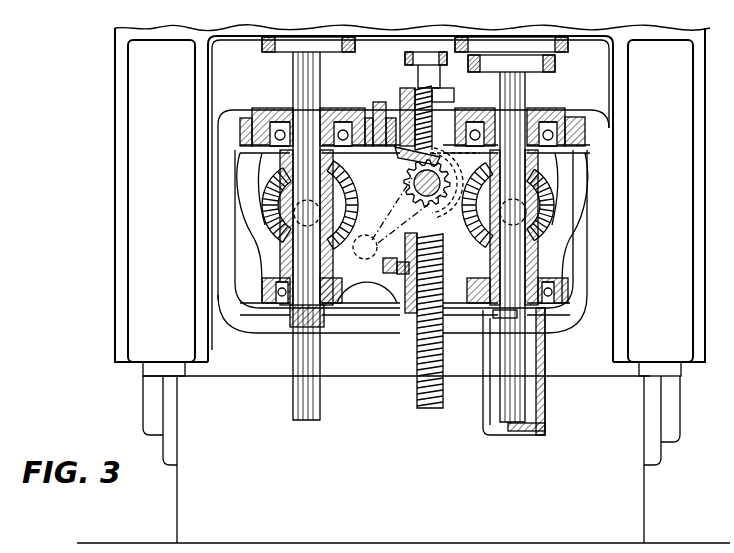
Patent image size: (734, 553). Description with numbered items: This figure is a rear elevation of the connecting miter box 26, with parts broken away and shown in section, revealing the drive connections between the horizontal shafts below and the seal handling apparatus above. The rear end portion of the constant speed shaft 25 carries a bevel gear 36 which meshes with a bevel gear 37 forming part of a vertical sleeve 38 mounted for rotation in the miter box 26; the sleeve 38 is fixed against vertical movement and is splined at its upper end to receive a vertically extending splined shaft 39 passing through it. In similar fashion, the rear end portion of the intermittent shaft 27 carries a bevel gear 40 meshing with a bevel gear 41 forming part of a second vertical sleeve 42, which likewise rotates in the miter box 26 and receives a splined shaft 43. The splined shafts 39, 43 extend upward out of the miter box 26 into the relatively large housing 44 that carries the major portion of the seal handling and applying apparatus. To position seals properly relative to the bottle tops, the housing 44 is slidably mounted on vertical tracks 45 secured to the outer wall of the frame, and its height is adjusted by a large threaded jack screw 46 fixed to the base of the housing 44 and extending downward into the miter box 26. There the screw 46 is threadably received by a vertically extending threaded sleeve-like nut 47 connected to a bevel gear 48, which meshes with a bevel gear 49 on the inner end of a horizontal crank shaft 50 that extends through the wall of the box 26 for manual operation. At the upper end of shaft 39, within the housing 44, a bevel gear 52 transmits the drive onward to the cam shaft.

The constant speed shaft 25 is at (526, 217).
The miter box 26 is at (222, 247).
The intermittent shaft 27 is at (294, 215).
The bevel gear 36 is at (484, 250).
The bevel gear 37 is at (555, 163).
The vertical sleeve 38 is at (530, 106).
The splined shaft 39 is at (526, 411).
The bevel gear 40 is at (348, 206).
The bevel gear 41 is at (263, 160).
The vertical sleeve 42 is at (292, 102).
The splined shaft 43 is at (313, 82).
The housing 44 is at (118, 50).
The vertical tracks 45 is at (145, 370).
The jack screw 46 is at (428, 408).
The threaded sleeve-like nut 47 is at (404, 147).
The bevel gear 48 is at (405, 160).
The bevel gear 49 is at (404, 186).
The crank shaft 50 is at (432, 212).
The bevel gear 52 is at (365, 258).